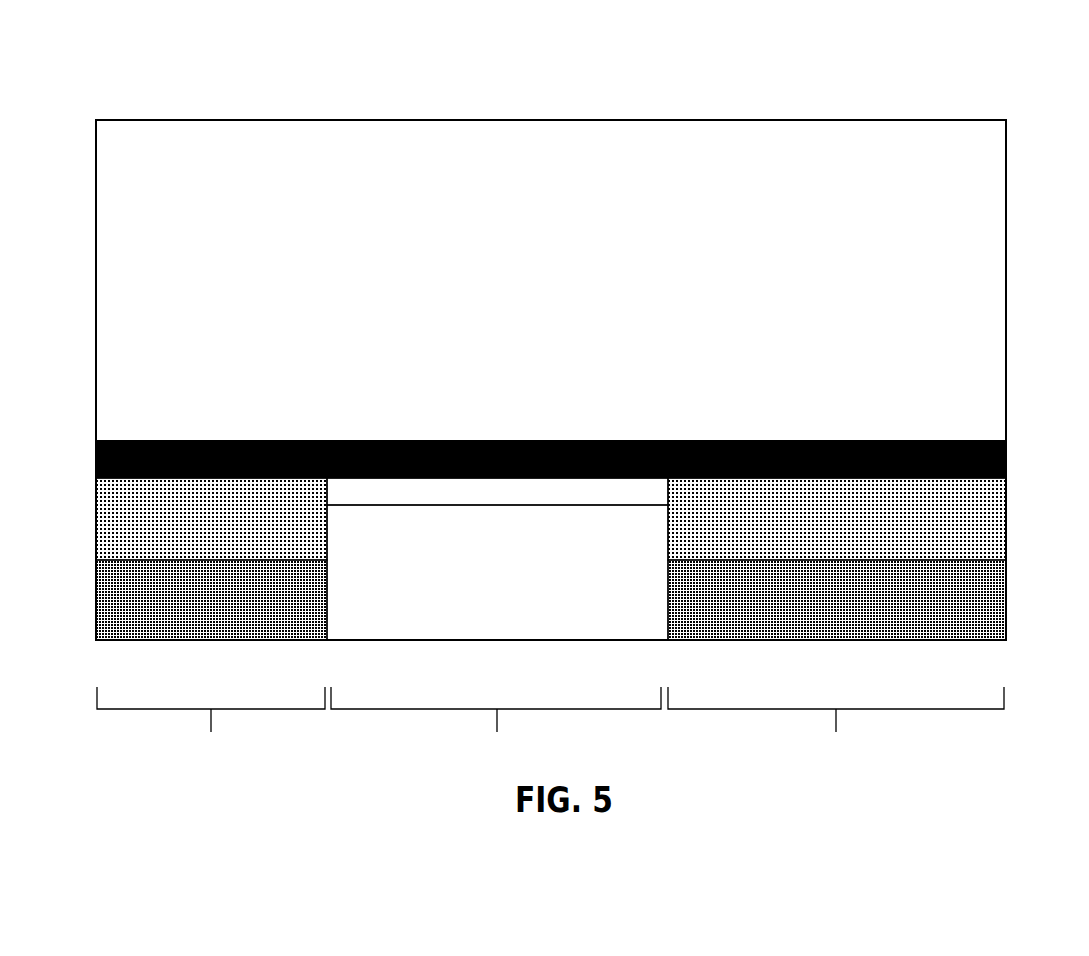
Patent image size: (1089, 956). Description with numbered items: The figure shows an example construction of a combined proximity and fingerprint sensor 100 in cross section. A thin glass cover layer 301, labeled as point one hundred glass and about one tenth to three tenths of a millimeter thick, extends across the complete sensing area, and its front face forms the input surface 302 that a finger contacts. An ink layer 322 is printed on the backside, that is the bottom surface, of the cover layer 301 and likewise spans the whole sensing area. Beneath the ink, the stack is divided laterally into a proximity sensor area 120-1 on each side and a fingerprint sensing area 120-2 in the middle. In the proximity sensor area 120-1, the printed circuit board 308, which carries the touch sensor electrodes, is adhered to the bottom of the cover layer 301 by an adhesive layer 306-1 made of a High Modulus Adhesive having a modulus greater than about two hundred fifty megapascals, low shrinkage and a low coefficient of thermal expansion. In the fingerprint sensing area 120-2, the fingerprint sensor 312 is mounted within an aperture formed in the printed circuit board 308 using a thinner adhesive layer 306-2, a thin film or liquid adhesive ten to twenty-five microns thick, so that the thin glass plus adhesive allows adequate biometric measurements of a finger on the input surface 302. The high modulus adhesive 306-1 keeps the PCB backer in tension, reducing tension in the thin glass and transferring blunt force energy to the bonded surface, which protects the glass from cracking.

The display device stack 100 is at (220, 88).
The cover layer 301 is at (551, 280).
The input surface 302 is at (738, 120).
The ink layer 322 is at (1008, 462).
The adhesive layer 306-1 is at (551, 519).
The adhesive layer 306-2 is at (497, 491).
The printed circuit board 308 is at (551, 600).
The fingerprint sensor 312 is at (497, 572).
The proximity sensor area 120-1 is at (550, 725).
The fingerprint sensing area 120-2 is at (496, 725).